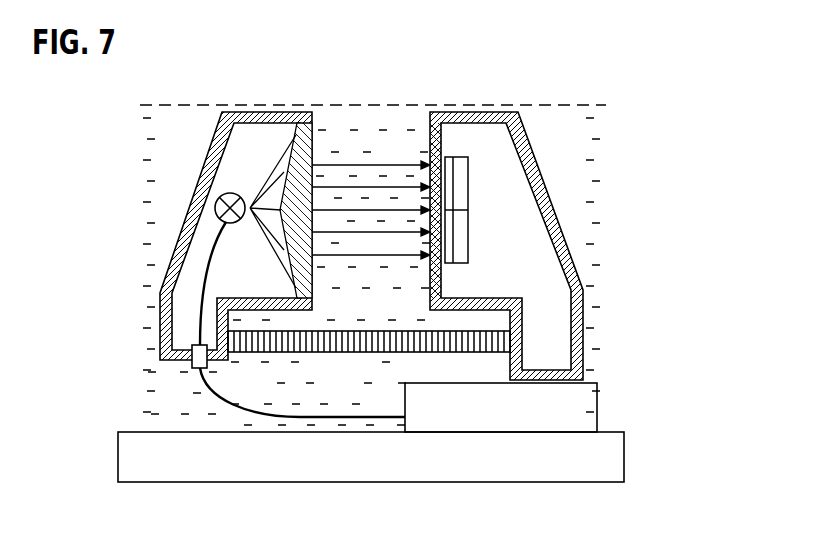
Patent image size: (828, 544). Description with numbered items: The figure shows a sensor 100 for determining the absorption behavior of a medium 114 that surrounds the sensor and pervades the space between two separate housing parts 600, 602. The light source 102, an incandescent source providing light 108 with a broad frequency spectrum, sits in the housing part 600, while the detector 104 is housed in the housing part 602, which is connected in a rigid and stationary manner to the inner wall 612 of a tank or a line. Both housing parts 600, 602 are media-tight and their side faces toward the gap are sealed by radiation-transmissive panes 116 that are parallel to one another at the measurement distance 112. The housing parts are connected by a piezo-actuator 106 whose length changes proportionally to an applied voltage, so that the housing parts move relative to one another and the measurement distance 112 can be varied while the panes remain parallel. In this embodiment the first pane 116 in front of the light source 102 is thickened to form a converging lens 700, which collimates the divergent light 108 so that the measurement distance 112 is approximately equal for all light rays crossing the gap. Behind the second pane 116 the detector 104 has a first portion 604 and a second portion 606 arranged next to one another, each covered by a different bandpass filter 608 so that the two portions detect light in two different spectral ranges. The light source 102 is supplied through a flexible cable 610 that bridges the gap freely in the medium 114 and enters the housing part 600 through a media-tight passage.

The sensor 100 is at (372, 212).
The light source 102 is at (215, 208).
The detector 104 is at (452, 154).
The piezo-actuator 106 is at (318, 355).
The light 108 is at (389, 162).
The measurement distance 112 is at (375, 292).
The medium 114 is at (348, 123).
The pane 116 is at (310, 112).
The housing part 600 is at (175, 247).
The housing part 602 is at (583, 248).
The first portion 604 is at (469, 177).
The second portion 606 is at (469, 246).
The filter 608 is at (440, 112).
The flexible cable 610 is at (245, 418).
The inner wall 612 is at (624, 460).
The converging lens 700 is at (287, 268).